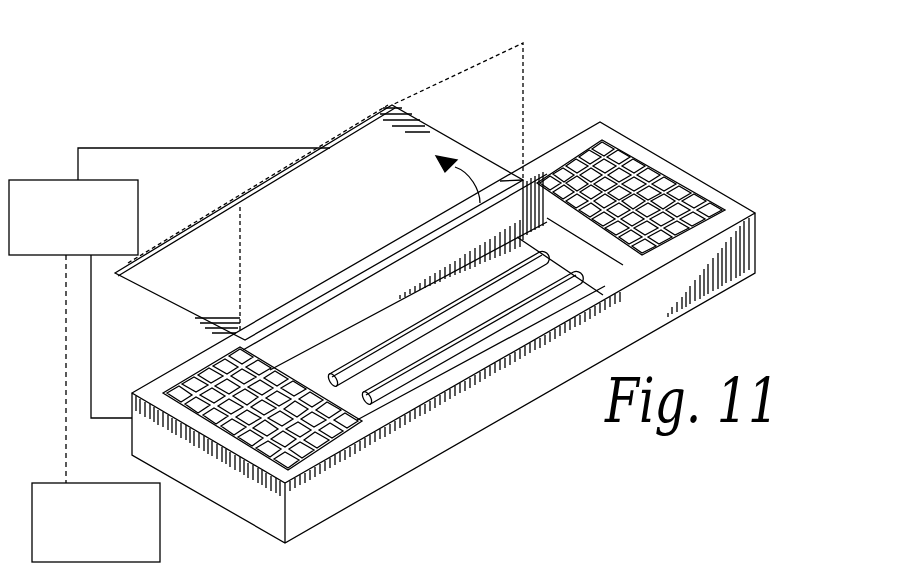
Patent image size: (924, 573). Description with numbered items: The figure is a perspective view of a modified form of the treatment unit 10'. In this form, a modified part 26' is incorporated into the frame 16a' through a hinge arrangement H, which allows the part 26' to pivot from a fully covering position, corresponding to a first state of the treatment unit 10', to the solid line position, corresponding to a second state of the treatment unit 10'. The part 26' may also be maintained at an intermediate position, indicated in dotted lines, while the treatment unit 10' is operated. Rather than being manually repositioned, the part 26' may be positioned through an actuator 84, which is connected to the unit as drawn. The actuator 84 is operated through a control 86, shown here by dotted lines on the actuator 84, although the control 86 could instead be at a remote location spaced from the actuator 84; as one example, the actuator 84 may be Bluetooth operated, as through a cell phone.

The treatment unit 10' is at (473, 283).
The frame 16a' is at (443, 332).
The part 26' is at (319, 182).
The hinge arrangement H is at (505, 177).
The actuator 84 is at (63, 243).
The control 86 is at (86, 550).